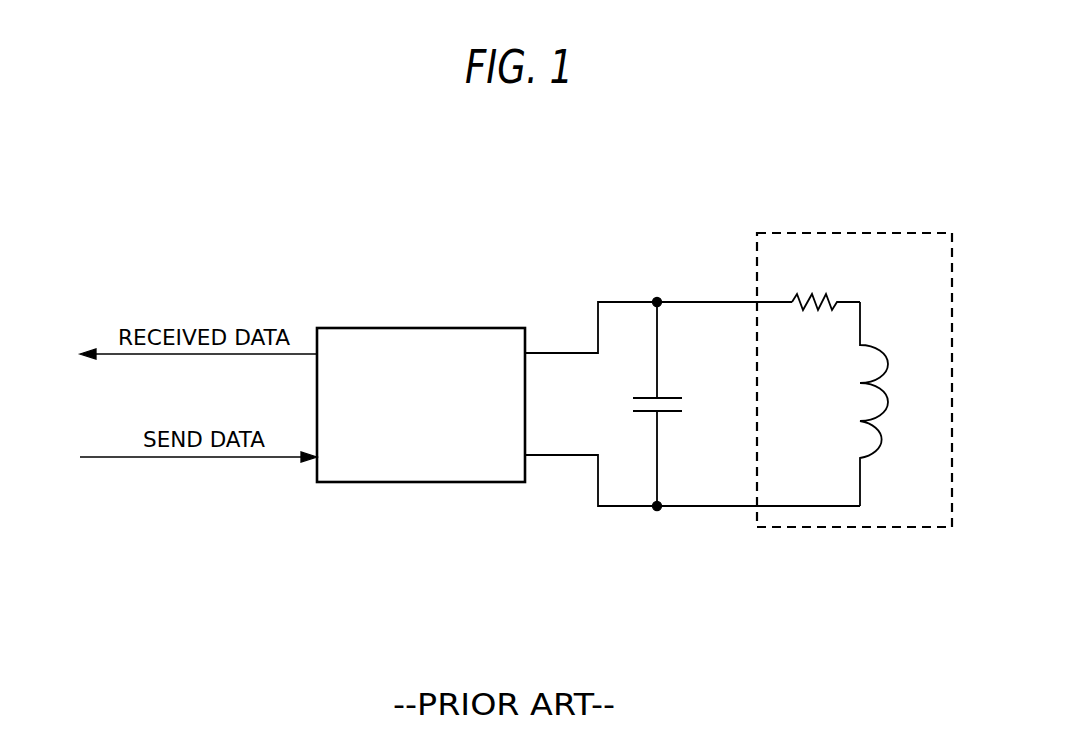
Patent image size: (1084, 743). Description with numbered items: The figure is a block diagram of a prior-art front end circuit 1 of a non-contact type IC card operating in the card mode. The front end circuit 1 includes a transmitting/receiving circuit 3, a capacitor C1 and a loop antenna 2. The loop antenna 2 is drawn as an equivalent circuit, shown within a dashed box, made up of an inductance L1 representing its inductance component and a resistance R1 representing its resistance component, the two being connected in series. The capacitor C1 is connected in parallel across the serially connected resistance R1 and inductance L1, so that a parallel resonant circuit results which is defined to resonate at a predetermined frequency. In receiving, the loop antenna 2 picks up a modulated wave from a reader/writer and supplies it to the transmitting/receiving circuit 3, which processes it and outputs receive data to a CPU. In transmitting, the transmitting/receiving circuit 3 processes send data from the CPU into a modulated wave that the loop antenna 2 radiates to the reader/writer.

The front end circuit 1 is at (692, 352).
The loop antenna 2 is at (854, 350).
The transmitting/receiving circuit 3 is at (423, 328).
The capacitor C1 is at (668, 396).
The resistance R1 is at (821, 310).
The inductance L1 is at (878, 348).